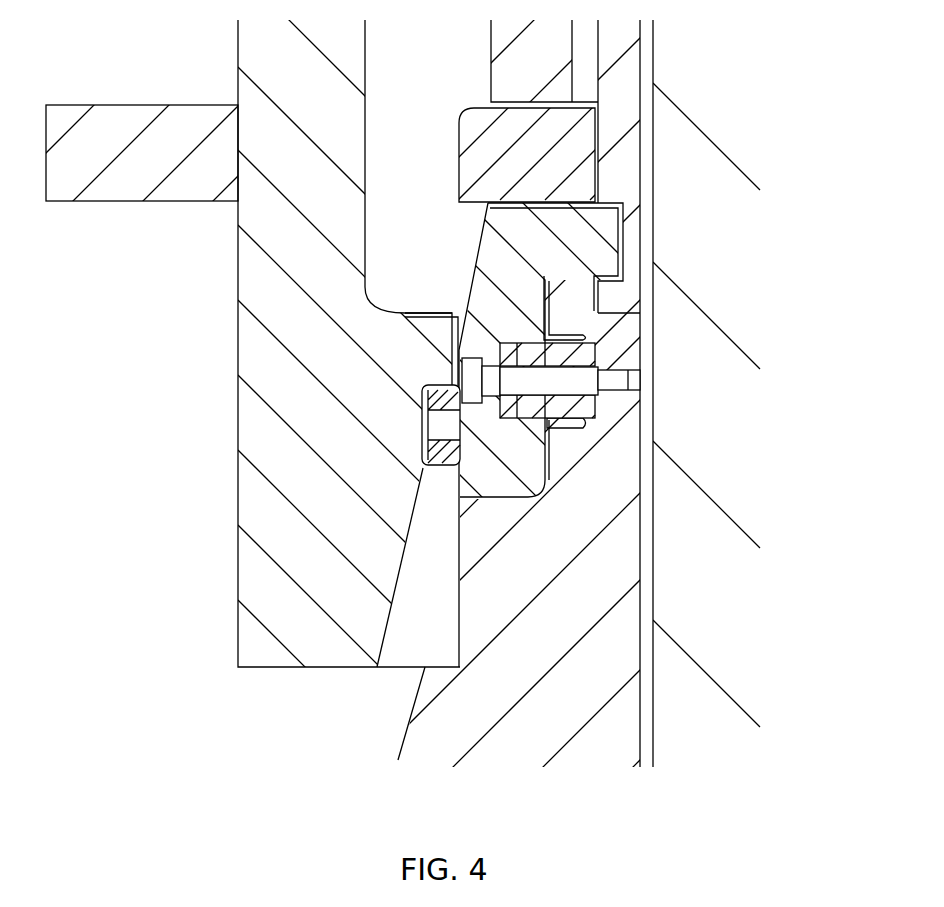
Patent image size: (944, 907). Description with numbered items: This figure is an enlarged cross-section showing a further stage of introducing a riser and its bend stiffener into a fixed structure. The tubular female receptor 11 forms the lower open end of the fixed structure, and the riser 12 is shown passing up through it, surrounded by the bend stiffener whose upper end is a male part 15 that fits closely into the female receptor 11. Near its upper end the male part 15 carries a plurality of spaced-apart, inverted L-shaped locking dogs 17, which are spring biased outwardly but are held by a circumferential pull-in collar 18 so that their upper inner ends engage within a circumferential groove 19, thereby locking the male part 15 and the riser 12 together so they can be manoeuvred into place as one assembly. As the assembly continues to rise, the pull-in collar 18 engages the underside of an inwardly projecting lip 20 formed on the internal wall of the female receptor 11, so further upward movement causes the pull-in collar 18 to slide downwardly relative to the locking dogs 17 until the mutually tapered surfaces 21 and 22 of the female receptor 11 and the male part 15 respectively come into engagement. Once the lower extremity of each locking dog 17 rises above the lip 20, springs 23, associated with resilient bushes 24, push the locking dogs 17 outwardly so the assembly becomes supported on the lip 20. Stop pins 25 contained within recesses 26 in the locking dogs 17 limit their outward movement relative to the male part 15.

The tubular female receptor 11 is at (237, 322).
The riser 12 is at (728, 623).
The male part 15 is at (612, 572).
The locking dogs 17 is at (487, 243).
The pull-in collar 18 is at (426, 398).
The circumferential groove 19 is at (618, 243).
The inwardly projecting lip 20 is at (446, 332).
The tapered surface 21 is at (383, 642).
The tapered surface 22 is at (410, 717).
The springs 23 is at (618, 378).
The resilient bushes 24 is at (568, 410).
The stop pins 25 is at (472, 370).
The recesses 26 is at (492, 403).